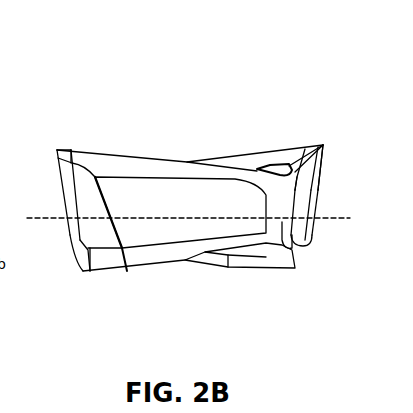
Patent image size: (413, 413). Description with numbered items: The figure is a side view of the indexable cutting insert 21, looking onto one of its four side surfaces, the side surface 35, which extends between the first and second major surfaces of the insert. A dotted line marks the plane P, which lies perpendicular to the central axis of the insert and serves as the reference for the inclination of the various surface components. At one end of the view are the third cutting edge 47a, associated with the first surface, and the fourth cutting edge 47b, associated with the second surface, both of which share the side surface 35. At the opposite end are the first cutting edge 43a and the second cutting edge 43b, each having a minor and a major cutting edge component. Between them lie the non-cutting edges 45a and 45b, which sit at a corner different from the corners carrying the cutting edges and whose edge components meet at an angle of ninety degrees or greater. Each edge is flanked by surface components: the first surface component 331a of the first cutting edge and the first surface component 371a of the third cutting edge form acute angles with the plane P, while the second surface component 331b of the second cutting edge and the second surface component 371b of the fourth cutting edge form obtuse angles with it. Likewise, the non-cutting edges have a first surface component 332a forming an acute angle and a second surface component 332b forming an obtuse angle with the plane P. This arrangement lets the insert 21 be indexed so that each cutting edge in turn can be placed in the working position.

The cutting insert 21 is at (283, 67).
The side surface 35 is at (172, 215).
The first cutting edge 43a is at (324, 144).
The second cutting edge 43b is at (301, 266).
The non-cutting edge 45a is at (279, 172).
The non-cutting edge 45b is at (282, 238).
The third cutting edge 47a is at (55, 146).
The fourth cutting edge 47b is at (81, 278).
The first surface component 331a is at (323, 146).
The second surface component 331b is at (310, 247).
The first surface component 332a is at (298, 190).
The second surface component 332b is at (295, 260).
The first surface component 371a is at (57, 161).
The second surface component 371b is at (84, 258).
The plane P is at (40, 217).